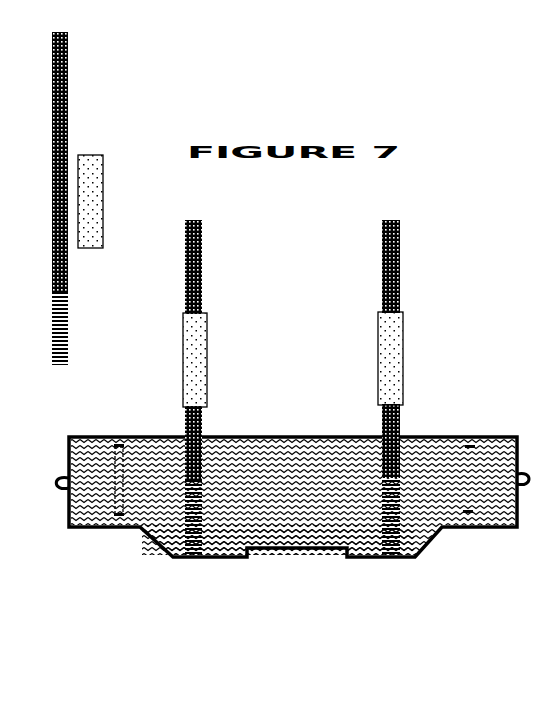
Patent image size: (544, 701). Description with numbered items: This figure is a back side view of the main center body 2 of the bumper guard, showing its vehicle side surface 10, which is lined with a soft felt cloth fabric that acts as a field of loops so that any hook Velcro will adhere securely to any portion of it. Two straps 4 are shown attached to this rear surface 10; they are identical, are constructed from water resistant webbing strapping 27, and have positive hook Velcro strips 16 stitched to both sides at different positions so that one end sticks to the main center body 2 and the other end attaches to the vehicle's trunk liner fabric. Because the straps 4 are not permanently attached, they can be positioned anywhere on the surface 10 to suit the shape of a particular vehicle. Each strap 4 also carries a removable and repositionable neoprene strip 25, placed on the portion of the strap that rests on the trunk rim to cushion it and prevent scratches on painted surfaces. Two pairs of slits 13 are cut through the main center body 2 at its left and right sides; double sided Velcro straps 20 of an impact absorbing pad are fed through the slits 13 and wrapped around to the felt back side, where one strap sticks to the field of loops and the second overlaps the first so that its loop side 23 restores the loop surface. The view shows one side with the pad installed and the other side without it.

The main center body 2 is at (296, 562).
The straps 4 is at (356, 260).
The vehicle side surface (under-side/back-side) 10 is at (282, 435).
The slits 13 is at (124, 445).
The positive/hook Velcro strips 16 is at (68, 99).
The double sided Velcro straps 20 is at (110, 503).
The loop side 23 is at (117, 447).
The neoprene strips 25 is at (103, 197).
The webbing/synthetic fiber strapping 27 is at (68, 336).